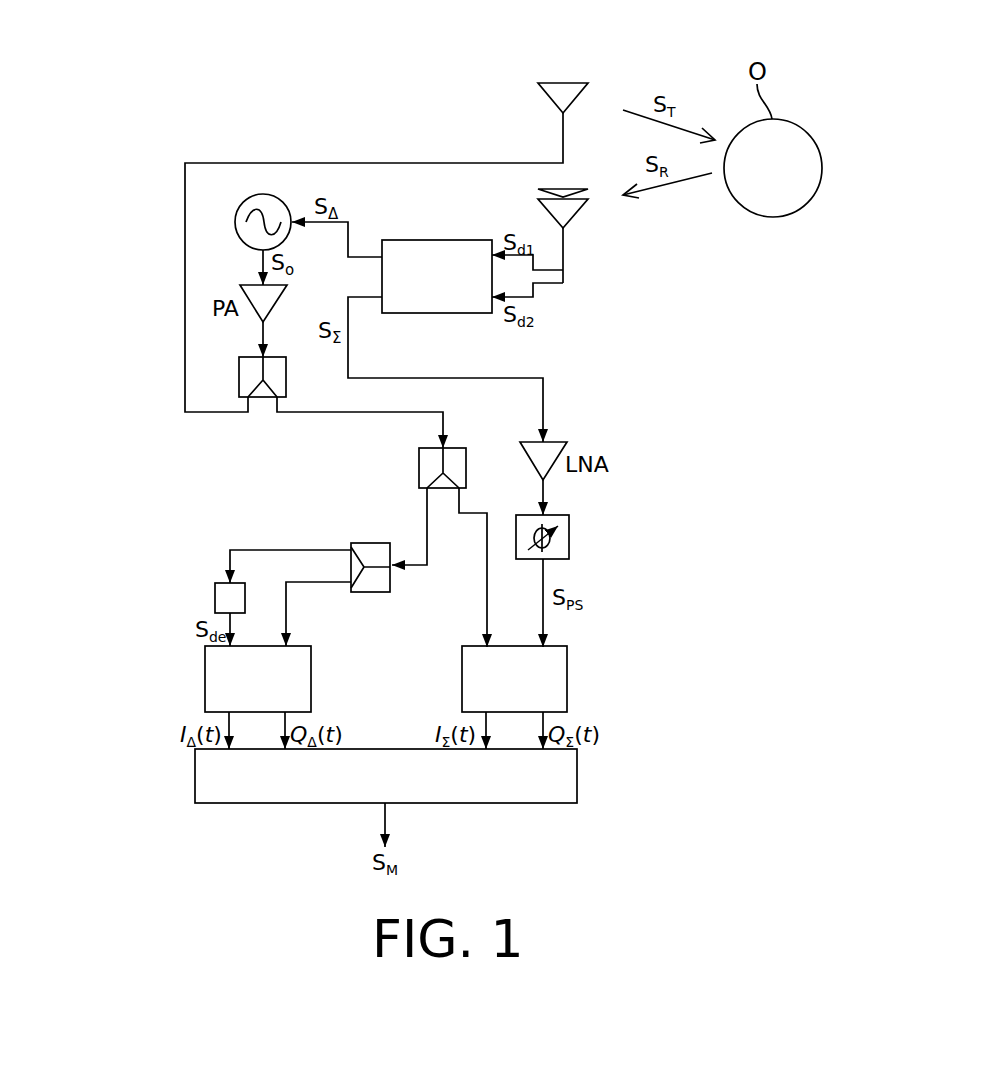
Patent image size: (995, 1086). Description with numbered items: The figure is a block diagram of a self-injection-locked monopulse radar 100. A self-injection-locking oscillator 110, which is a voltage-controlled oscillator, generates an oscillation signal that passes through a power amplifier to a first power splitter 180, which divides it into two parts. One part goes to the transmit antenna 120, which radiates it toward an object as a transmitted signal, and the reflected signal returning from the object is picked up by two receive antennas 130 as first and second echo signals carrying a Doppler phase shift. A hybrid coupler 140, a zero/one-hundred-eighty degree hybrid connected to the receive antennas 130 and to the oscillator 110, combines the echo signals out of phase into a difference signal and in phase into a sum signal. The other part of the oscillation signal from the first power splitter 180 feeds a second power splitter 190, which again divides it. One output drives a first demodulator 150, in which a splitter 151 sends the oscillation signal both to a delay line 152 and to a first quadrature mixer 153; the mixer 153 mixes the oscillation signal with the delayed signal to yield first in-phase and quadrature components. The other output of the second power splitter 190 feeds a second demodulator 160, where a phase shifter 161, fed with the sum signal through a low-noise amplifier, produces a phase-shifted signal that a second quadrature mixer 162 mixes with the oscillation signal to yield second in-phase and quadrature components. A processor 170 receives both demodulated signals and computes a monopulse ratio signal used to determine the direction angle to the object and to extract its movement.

The SIL monopulse radar 100 is at (148, 115).
The self-injection-locking oscillator 110 is at (263, 194).
The transmit antenna 120 is at (563, 83).
The receive antennas 130 is at (538, 192).
The hybrid coupler 140 is at (412, 240).
The first demodulator 150 is at (222, 527).
The splitter 151 is at (370, 543).
The delay line 152 is at (215, 602).
The first quadrature mixer 153 is at (205, 680).
The second demodulator 160 is at (672, 497).
The phase shifter 161 is at (569, 540).
The second quadrature mixer 162 is at (568, 680).
The processor 170 is at (578, 784).
The first power splitter 180 is at (238, 378).
The second power splitter 190 is at (419, 462).